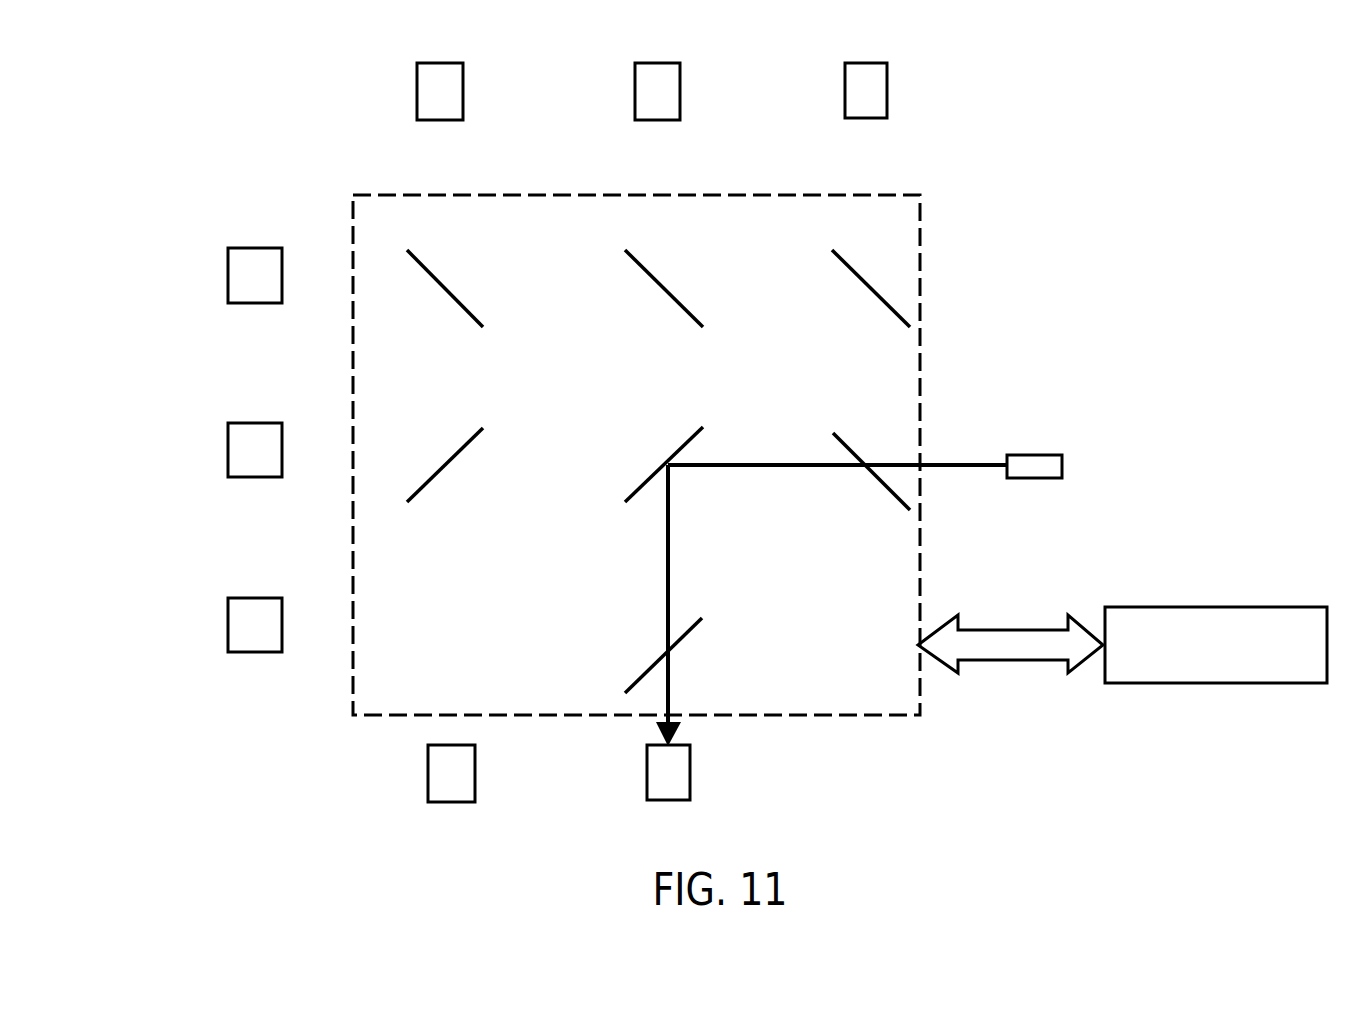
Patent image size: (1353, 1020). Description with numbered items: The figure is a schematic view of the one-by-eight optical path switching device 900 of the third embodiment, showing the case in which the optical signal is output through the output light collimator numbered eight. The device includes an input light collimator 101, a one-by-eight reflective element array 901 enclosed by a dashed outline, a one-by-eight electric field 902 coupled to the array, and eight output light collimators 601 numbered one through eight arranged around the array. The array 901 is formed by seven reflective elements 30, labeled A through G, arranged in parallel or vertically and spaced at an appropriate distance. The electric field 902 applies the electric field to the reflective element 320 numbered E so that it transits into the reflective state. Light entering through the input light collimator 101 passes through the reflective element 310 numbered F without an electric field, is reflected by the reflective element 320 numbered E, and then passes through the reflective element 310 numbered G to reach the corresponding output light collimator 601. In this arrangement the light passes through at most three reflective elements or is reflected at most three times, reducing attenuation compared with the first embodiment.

The 1×8 optical path switching device 900 is at (1118, 112).
The output light collimators 601 is at (440, 63).
The 1×8 reflective element array 901 is at (920, 257).
The reflective element 30 is at (644, 457).
The reflective element without electric field applied 310 is at (455, 240).
The reflective element with electric field applied 320 is at (672, 453).
The input light collimator 101 is at (1040, 455).
The 1×8 electric field 902 is at (1213, 607).